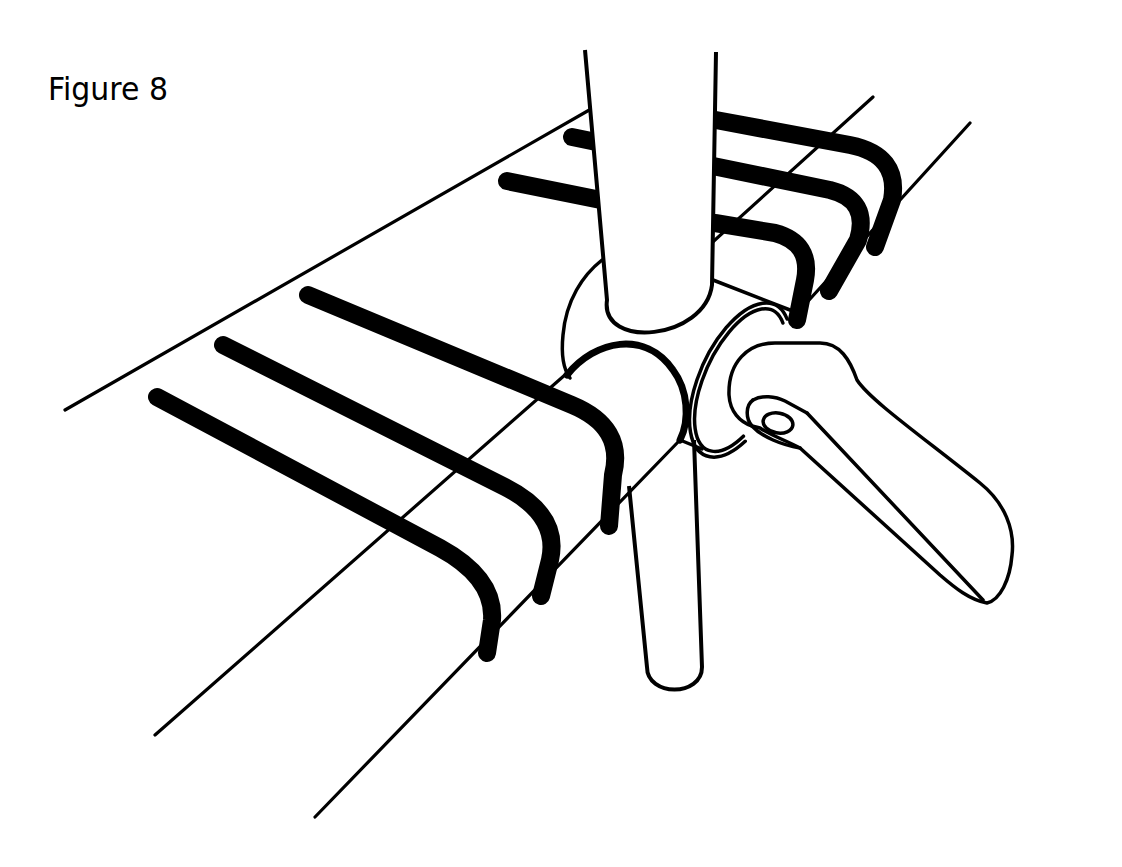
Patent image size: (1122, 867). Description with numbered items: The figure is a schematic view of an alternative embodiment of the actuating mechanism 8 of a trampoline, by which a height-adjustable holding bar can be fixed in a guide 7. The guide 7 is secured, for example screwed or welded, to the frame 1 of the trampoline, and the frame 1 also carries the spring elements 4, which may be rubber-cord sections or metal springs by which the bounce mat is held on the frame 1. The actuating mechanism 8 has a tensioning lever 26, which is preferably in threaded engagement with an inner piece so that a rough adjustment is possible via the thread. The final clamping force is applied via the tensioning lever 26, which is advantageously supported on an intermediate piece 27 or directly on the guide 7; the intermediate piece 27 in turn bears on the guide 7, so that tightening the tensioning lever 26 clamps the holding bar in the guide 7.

The frame 1 is at (910, 167).
The spring elements 4 is at (270, 477).
The guide 7 is at (587, 337).
The actuating mechanism 8 is at (913, 509).
The tensioning lever 26 is at (970, 500).
The intermediate piece 27 is at (742, 400).